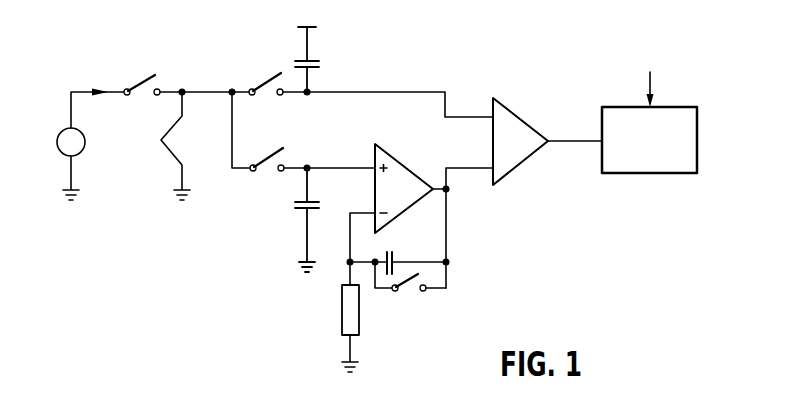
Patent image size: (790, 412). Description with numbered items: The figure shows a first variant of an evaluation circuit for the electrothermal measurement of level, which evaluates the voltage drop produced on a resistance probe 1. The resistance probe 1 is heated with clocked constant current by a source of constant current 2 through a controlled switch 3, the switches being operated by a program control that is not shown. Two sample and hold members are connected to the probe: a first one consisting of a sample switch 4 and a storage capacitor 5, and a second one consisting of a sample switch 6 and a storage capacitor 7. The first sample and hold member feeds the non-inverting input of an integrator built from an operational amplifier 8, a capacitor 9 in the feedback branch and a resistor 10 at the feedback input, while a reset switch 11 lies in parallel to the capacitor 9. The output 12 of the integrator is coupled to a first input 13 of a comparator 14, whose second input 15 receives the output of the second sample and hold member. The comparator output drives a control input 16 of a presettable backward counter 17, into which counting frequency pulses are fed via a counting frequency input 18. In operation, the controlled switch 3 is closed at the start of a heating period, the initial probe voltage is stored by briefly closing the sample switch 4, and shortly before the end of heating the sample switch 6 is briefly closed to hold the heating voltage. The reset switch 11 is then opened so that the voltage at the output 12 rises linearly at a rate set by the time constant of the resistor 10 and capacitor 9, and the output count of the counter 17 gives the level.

The resistance probe 1 is at (171, 127).
The source of constant current 2 is at (82, 135).
The controlled switch 3 is at (147, 83).
The sample switch 4 is at (275, 155).
The storage capacitor 5 is at (297, 206).
The sample switch 6 is at (270, 80).
The storage capacitor 7 is at (317, 62).
The operational amplifier 8 is at (402, 177).
The capacitor 9 is at (393, 259).
The resistor 10 is at (345, 315).
The reset switch 11 is at (409, 287).
The output 12 is at (436, 186).
The first input 13 is at (477, 169).
The comparator 14 is at (512, 157).
The second input 15 is at (473, 116).
The control input 16 is at (596, 143).
The presettable backward counter 17 is at (660, 160).
The counting frequency input 18 is at (651, 83).